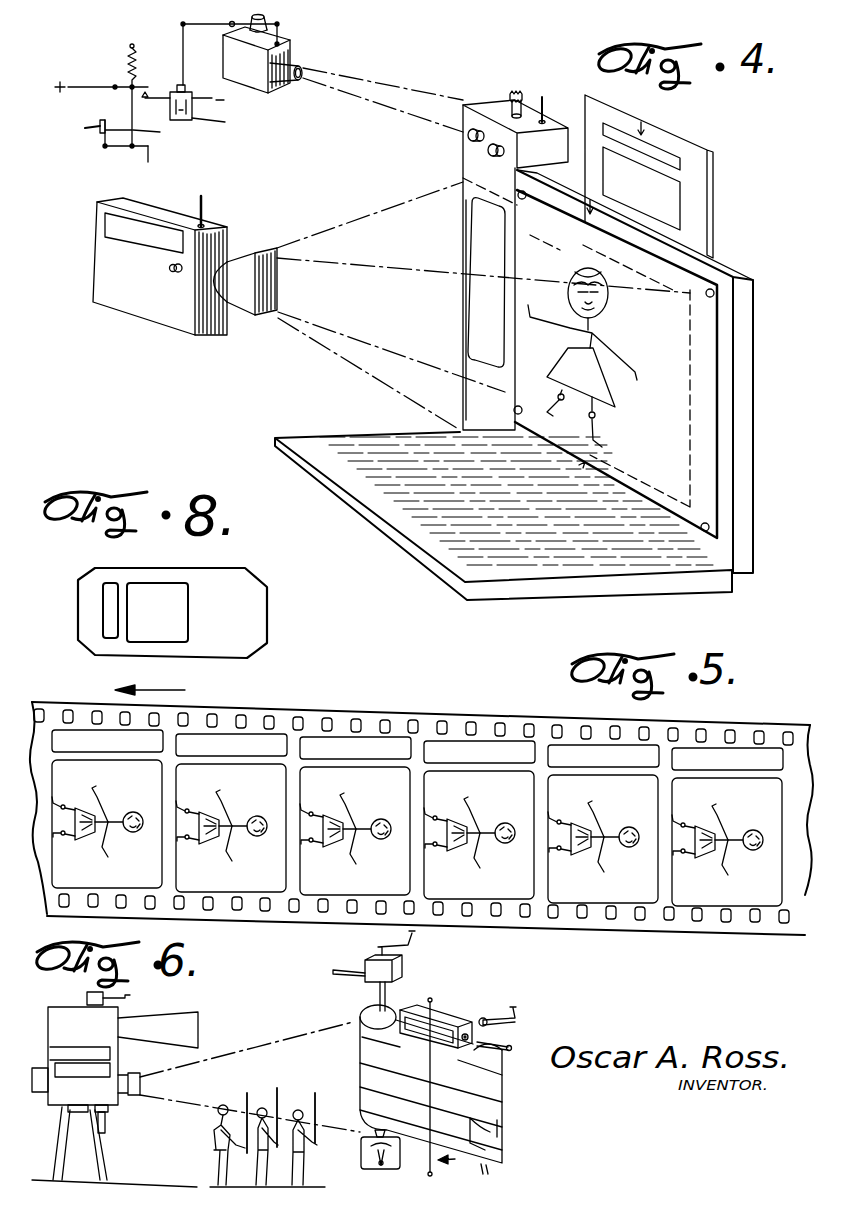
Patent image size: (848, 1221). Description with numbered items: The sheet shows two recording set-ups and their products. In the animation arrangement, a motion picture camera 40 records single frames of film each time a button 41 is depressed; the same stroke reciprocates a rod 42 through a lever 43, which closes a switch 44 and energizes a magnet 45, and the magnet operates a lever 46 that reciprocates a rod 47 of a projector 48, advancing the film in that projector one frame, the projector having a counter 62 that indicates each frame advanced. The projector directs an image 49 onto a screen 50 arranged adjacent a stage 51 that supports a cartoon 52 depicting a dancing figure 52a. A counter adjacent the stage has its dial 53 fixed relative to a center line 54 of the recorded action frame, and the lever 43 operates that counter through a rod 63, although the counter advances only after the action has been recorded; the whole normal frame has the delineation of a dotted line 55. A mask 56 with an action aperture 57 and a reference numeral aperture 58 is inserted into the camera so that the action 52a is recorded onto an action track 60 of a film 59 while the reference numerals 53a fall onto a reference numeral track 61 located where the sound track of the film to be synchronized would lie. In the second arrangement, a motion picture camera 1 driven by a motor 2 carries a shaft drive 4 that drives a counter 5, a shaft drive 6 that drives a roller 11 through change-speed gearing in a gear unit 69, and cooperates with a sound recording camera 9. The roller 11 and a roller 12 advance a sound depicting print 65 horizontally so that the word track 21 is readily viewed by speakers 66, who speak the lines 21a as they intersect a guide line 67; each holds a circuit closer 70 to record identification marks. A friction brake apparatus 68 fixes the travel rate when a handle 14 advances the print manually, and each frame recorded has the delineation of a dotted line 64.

In FIG. 6, the motion picture camera 1 is at (62, 1097).
In FIG. 6, the motor 2 is at (46, 1070).
In FIG. 6, the shaft drive 4 is at (110, 1127).
In FIG. 6, the counter 5 is at (443, 1017).
In FIG. 6, the shaft drive 6 is at (128, 997).
In FIG. 6, the sound recording camera 9 is at (57, 1017).
In FIG. 6, the roller 11 is at (392, 1002).
In FIG. 6, the roller 12 is at (490, 1040).
In FIG. 6, the handle 14 is at (416, 945).
In FIG. 6, the word track 21 is at (360, 1068).
In FIG. 6, the lines 21a is at (500, 1102).
In FIG. 4, the motion picture camera 40 is at (100, 270).
In FIG. 4, the button 41 is at (93, 127).
In FIG. 4, the rod 42 is at (238, 188).
In FIG. 4, the lever 43 is at (138, 148).
In FIG. 4, the switch 44 is at (122, 82).
In FIG. 4, the magnet 45 is at (193, 110).
In FIG. 4, the lever 46 is at (183, 24).
In FIG. 4, the rod 47 is at (280, 42).
In FIG. 4, the projector 48 is at (276, 94).
In FIG. 4, the image 49 is at (673, 215).
In FIG. 4, the screen 50 is at (700, 180).
In FIG. 4, the stage 51 is at (750, 412).
In FIG. 4, the cartoon 52 is at (473, 167).
In FIG. 4, the dancing figure 52a is at (630, 390).
In FIG. 5, the dancing figure 52a is at (450, 857).
In FIG. 4, the dial 53 is at (473, 330).
In FIG. 4, the reference numerals 53a is at (480, 310).
In FIG. 5, the reference numerals 53a is at (463, 747).
In FIG. 4, the center line 54 is at (583, 468).
In FIG. 4, the dotted line 55 is at (643, 480).
In FIG. 8, the mask 56 is at (233, 580).
In FIG. 8, the action aperture 57 is at (183, 625).
In FIG. 8, the reference numeral aperture 58 is at (113, 613).
In FIG. 5, the film 59 is at (325, 718).
In FIG. 5, the action track 60 is at (537, 883).
In FIG. 5, the reference numeral track 61 is at (428, 716).
In FIG. 4, the counter 62 is at (240, 49).
In FIG. 4, the rod 63 is at (150, 160).
In FIG. 6, the dotted line 64 is at (497, 1152).
In FIG. 6, the sound depicting print 65 is at (367, 1030).
In FIG. 6, the speakers 66 is at (213, 1148).
In FIG. 6, the guide line 67 is at (432, 1168).
In FIG. 6, the friction brake apparatus 68 is at (393, 1169).
In FIG. 6, the gear unit 69 is at (367, 962).
In FIG. 6, the circuit closer 70 is at (330, 1147).